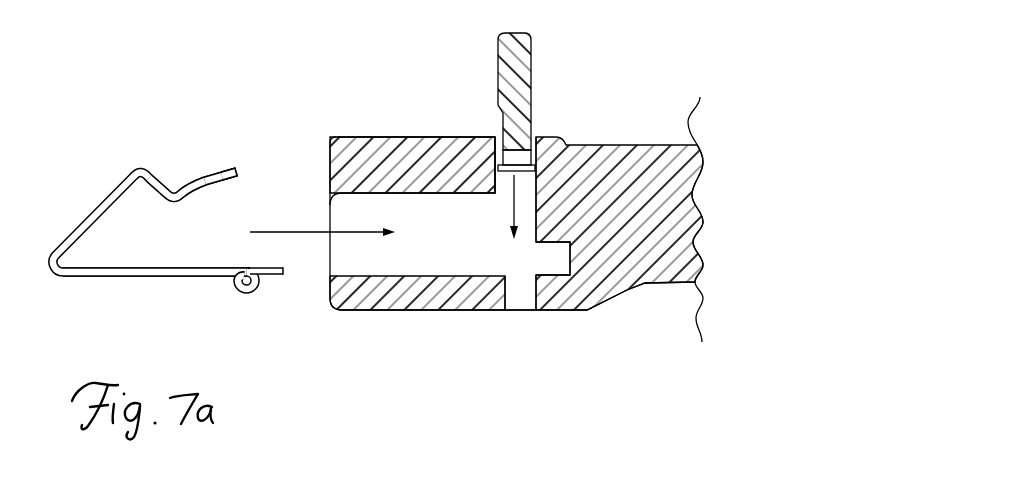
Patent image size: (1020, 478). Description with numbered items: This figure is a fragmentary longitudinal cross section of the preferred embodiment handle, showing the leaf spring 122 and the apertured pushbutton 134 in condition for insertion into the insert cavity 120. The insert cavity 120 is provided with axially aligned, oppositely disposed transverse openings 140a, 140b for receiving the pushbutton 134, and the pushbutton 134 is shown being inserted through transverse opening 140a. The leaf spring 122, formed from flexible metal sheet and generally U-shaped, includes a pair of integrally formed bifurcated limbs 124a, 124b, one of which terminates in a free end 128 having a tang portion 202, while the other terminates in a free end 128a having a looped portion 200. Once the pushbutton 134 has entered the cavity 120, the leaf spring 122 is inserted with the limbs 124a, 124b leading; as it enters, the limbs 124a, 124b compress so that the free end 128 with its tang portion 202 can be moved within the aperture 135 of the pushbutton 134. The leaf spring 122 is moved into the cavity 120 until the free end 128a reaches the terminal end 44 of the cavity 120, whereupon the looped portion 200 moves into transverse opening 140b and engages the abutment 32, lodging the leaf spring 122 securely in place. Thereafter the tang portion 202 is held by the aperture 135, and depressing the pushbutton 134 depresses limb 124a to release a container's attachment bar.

The leaf spring 122 is at (102, 202).
The bifurcated limb 124a is at (186, 189).
The bifurcated limb 124b is at (153, 277).
The free end 128 is at (213, 167).
The free end 128a is at (284, 277).
The looped portion 200 is at (234, 285).
The tang portion 202 is at (240, 170).
The insert cavity 120 is at (392, 252).
The transverse opening 140a is at (494, 148).
The transverse opening 140b is at (523, 295).
The abutment 32 is at (515, 295).
The terminal end 44 is at (557, 258).
The apertured pushbutton 134 is at (523, 82).
The aperture 135 is at (520, 158).